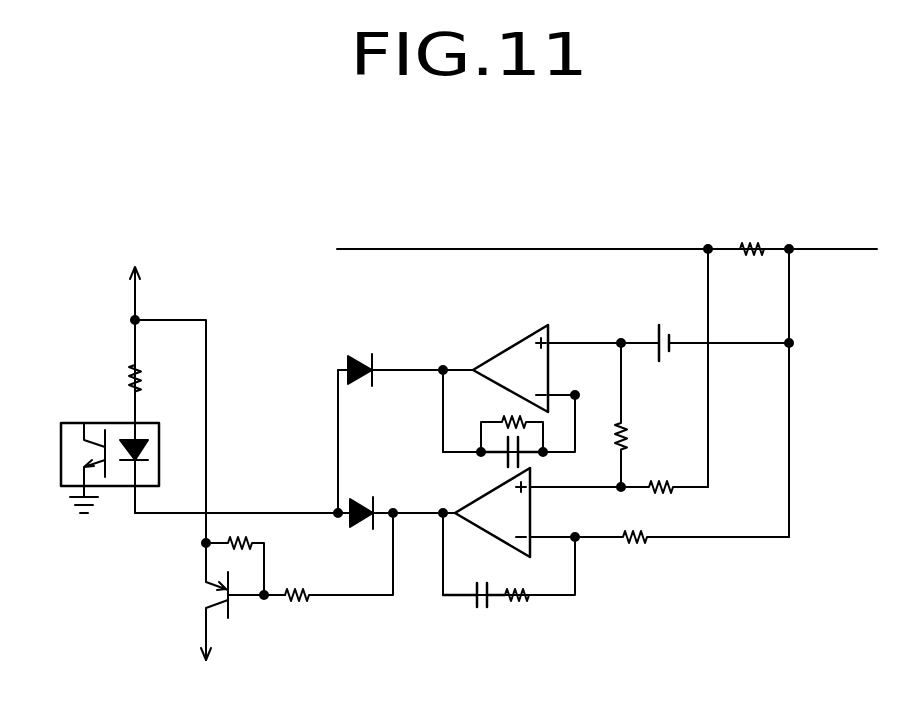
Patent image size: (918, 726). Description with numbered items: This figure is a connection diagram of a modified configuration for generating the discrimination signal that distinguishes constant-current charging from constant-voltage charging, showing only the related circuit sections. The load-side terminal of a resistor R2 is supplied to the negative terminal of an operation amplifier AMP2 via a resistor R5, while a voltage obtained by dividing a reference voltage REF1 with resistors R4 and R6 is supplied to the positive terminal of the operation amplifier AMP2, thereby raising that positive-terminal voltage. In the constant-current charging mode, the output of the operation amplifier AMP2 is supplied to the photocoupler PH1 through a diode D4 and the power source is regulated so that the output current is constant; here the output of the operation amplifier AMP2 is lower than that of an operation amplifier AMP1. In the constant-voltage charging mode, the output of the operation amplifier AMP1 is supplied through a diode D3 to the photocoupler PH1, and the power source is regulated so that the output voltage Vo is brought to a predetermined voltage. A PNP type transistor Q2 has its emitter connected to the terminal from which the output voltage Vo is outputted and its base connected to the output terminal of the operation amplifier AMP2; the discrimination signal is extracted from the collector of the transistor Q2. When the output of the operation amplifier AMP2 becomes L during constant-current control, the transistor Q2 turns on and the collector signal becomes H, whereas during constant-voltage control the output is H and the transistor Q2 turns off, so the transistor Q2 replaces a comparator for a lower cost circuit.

The photocoupler PH1 is at (86, 423).
The PNP type transistor Q2 is at (232, 610).
The diode D3 is at (405, 353).
The diode D4 is at (396, 494).
The operation amplifier AMP1 is at (532, 396).
The operation amplifier AMP2 is at (511, 537).
The reference voltage REF1 is at (663, 325).
The resistor R2 is at (752, 240).
The resistor R4 is at (630, 425).
The resistor R5 is at (646, 545).
The resistor R6 is at (672, 492).
The output voltage Vo is at (132, 276).